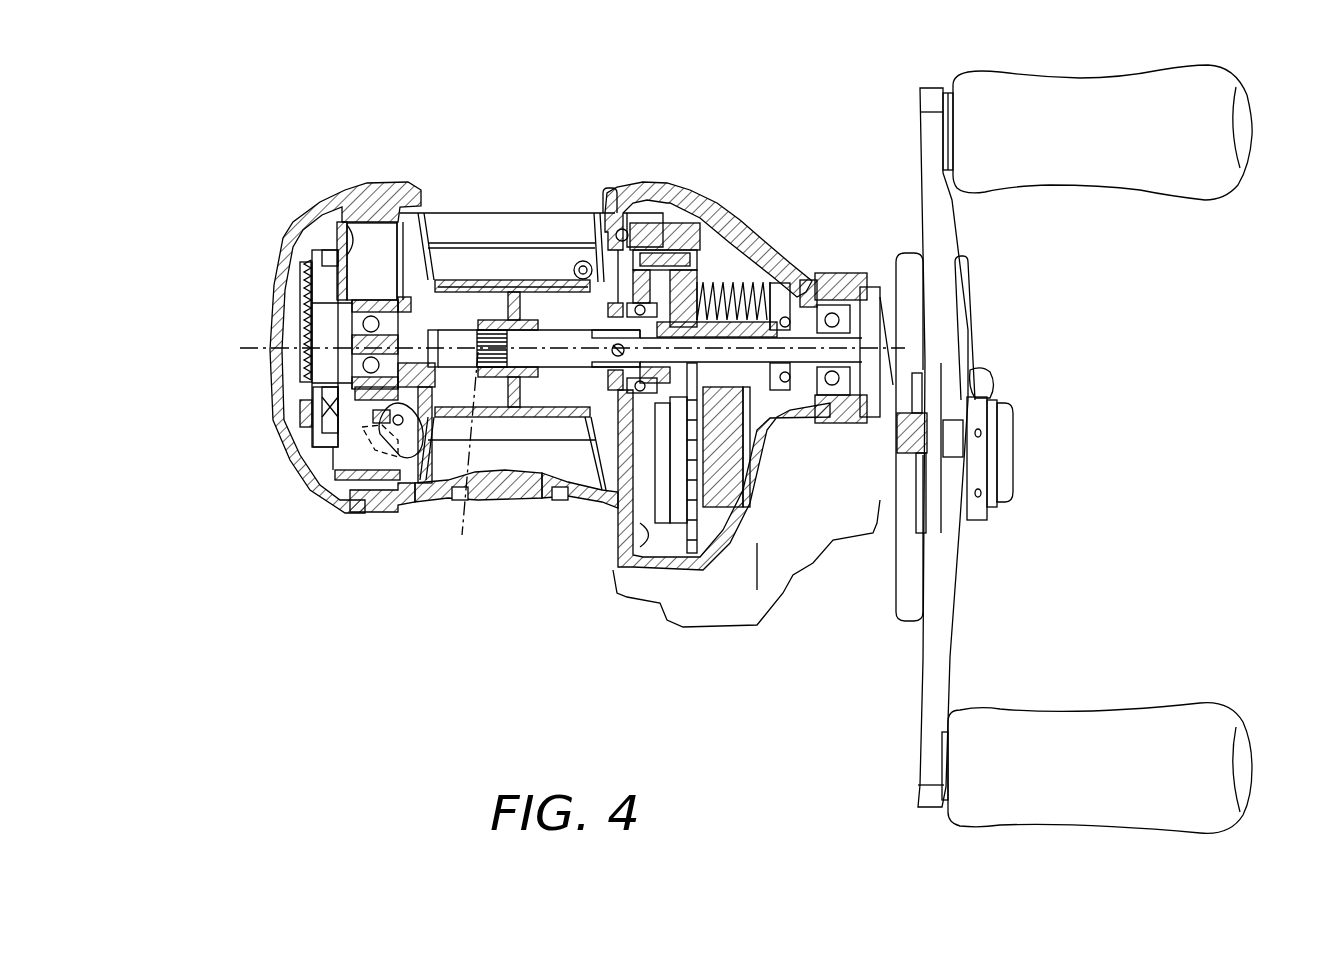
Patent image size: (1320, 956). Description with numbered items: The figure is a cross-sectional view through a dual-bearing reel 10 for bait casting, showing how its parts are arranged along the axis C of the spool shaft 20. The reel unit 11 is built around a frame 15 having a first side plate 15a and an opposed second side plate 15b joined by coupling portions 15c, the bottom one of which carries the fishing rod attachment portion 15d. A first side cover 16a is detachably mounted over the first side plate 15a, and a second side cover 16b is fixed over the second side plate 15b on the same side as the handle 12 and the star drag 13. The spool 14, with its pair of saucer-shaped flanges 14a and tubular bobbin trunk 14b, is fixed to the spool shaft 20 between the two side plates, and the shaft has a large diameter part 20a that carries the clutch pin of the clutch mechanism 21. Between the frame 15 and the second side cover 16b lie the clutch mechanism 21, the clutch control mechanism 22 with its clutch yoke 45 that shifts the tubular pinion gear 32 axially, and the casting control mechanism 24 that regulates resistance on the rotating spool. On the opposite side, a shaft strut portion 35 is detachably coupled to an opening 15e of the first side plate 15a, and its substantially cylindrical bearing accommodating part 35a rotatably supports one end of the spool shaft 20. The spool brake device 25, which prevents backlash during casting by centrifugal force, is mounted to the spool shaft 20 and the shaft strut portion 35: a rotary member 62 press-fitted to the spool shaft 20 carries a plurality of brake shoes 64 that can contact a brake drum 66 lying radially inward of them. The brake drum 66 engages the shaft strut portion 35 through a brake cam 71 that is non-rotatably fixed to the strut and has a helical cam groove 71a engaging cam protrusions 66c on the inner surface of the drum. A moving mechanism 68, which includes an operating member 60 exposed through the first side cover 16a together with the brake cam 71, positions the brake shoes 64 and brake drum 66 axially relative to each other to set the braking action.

The dual-bearing reel 10 is at (230, 140).
The reel unit 11 is at (405, 182).
The handle 12 is at (990, 632).
The star drag 13 is at (902, 233).
The spool 14 is at (588, 222).
The flanges 14a is at (535, 285).
The bobbin trunk 14b is at (548, 265).
The frame 15 is at (636, 178).
The first side plate 15a is at (380, 183).
The second side plate 15b is at (663, 610).
The coupling portions 15c is at (430, 497).
The fishing rod attachment portion 15d is at (500, 497).
The opening 15e is at (366, 497).
The first side cover 16a is at (290, 214).
The second side cover 16b is at (702, 198).
The spool shaft 20 is at (578, 380).
The large diameter part 20a is at (460, 337).
The clutch mechanism 21 is at (634, 568).
The clutch control mechanism 22 is at (703, 266).
The casting control mechanism 24 is at (830, 442).
The spool brake device 25 is at (373, 233).
The pinion gear 32 is at (716, 380).
The shaft strut portion 35 is at (392, 298).
The bearing accommodating part 35a is at (303, 403).
The clutch yoke 45 is at (700, 282).
The operating member 60 is at (303, 347).
The rotary member 62 is at (395, 462).
The brake shoes 64 is at (390, 462).
The brake drum 66 is at (333, 241).
The cam protrusions 66c is at (300, 373).
The moving mechanism 68 is at (297, 277).
The brake cam 71 is at (300, 423).
The cam groove 71a is at (303, 300).
The axis C is at (471, 464).